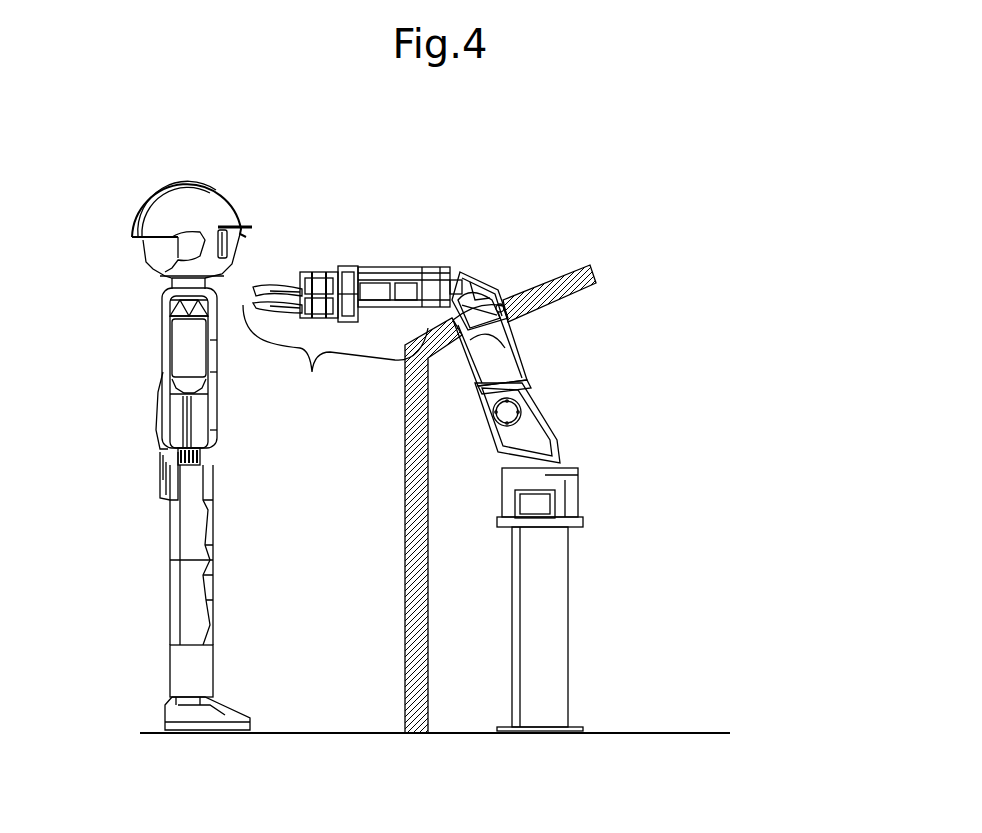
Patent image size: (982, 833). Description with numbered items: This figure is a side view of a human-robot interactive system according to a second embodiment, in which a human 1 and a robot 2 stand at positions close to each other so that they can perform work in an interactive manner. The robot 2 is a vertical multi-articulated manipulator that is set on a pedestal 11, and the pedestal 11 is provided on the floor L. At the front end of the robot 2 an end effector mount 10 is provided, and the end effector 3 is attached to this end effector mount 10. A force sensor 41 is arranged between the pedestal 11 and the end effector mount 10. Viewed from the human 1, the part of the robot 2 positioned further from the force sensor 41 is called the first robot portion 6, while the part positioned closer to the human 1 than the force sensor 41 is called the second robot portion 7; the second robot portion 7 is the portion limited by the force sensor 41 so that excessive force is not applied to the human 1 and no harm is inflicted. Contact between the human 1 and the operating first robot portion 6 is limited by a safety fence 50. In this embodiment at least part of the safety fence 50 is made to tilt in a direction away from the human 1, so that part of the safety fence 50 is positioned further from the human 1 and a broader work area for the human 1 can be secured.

The human 1 is at (183, 213).
The robot 2 is at (467, 262).
The end effector 3 is at (317, 262).
The first robot portion 6 is at (518, 318).
The second robot portion 7 is at (335, 353).
The end effector mount 10 is at (355, 262).
The pedestal 11 is at (557, 490).
The force sensor 41 is at (521, 262).
The safety fence 50 is at (596, 270).
The floor L is at (663, 732).